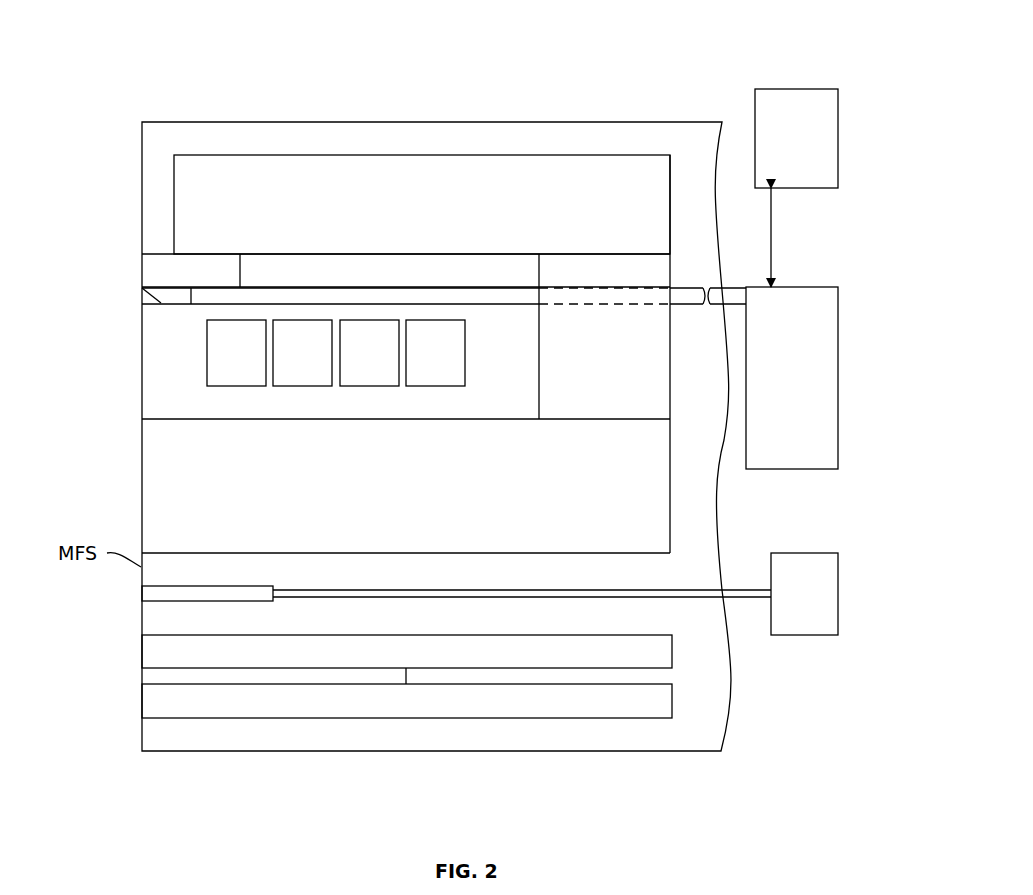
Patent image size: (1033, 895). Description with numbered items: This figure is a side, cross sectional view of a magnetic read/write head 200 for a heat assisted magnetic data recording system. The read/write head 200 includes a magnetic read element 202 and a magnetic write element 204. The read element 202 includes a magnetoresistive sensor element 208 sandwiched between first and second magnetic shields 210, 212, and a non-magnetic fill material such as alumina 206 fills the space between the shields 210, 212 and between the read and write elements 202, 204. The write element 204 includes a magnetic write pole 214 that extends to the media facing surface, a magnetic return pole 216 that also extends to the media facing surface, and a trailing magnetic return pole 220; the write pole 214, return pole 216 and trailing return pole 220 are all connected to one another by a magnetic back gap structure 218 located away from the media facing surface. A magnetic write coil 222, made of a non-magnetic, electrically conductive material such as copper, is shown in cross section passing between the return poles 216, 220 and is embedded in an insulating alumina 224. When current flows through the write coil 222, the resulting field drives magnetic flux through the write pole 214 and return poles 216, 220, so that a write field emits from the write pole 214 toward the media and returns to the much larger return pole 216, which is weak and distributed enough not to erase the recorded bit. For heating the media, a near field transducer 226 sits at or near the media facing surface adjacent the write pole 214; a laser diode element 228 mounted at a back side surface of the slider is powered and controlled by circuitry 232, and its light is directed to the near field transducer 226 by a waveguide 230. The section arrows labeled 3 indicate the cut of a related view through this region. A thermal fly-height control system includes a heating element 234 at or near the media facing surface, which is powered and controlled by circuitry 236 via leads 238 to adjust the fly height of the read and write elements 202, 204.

The magnetic read/write head 200 is at (414, 120).
The magnetic read element 202 is at (135, 750).
The magnetic write element 204 is at (133, 553).
The alumina 206 is at (338, 619).
The magnetoresistive sensor element 208 is at (262, 676).
The first magnetic shield 210 is at (450, 700).
The second magnetic shield 212 is at (450, 652).
The magnetic write pole 214 is at (225, 273).
The magnetic return pole 216 is at (450, 486).
The magnetic back gap structure 218 is at (563, 337).
The trailing magnetic return pole 220 is at (465, 206).
The magnetic write coil 222 is at (254, 365).
The alumina 224 is at (393, 404).
The near field transducer 226 is at (168, 298).
The laser diode element 228 is at (787, 452).
The waveguide 230 is at (465, 296).
The circuitry 232 is at (798, 89).
The heating element 234 is at (248, 586).
The circuitry 236 is at (797, 635).
The leads 238 is at (505, 590).
The section line for FIG. 3 is at (149, 262).